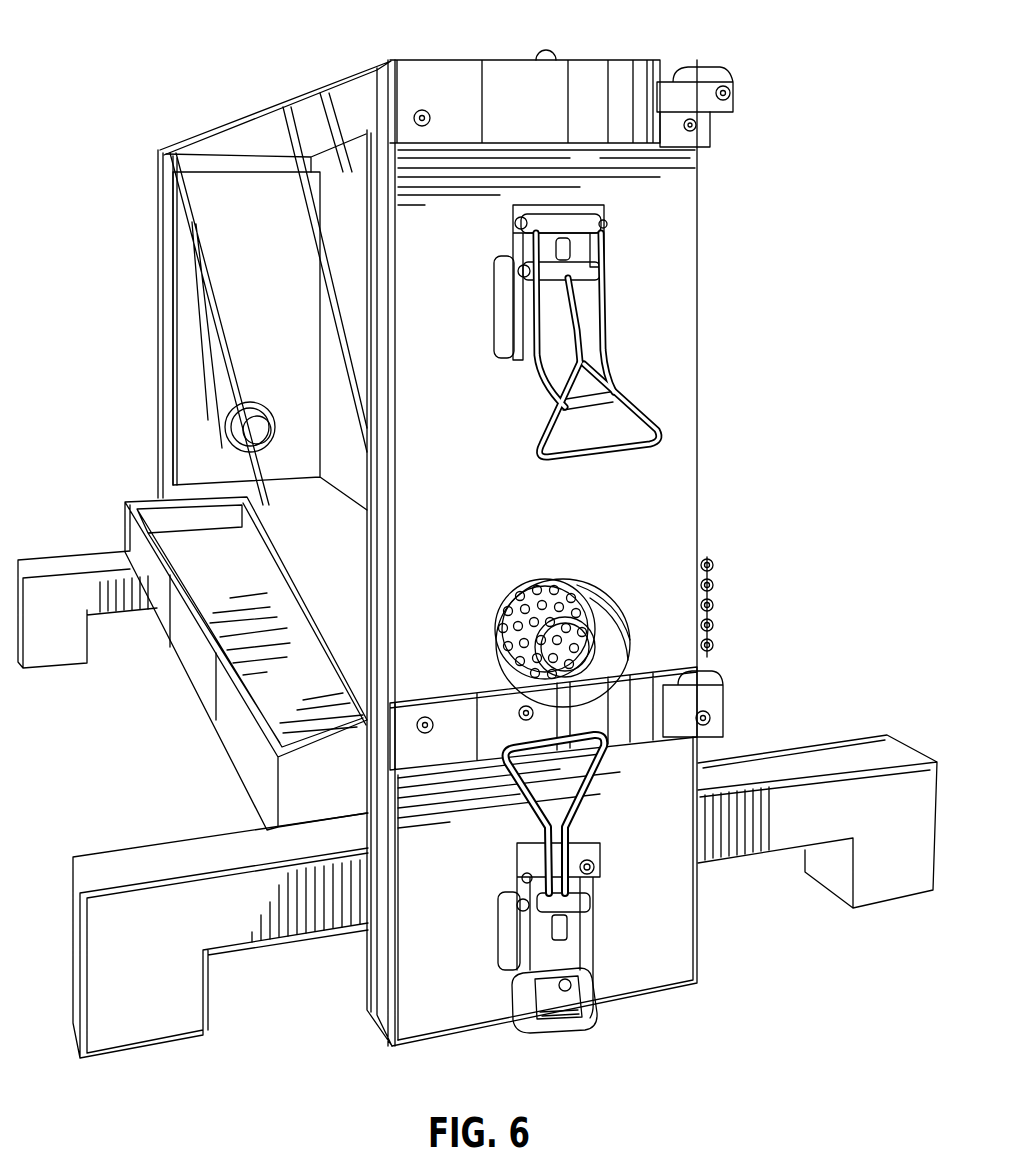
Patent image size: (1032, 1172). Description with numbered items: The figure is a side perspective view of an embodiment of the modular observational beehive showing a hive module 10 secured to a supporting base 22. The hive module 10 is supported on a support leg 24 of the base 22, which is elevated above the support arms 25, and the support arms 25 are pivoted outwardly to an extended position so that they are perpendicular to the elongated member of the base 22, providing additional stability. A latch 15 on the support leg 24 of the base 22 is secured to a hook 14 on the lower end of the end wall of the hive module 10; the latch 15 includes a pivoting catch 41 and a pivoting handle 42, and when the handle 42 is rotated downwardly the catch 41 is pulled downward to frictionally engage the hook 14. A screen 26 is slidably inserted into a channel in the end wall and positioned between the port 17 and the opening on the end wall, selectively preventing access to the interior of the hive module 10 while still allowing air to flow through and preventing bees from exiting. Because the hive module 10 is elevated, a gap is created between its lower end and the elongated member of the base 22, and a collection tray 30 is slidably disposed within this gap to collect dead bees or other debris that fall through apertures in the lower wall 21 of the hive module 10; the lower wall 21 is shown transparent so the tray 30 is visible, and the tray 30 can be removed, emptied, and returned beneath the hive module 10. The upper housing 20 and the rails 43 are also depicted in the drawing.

The hive module 10 is at (134, 237).
The upper cabinet 20 is at (352, 99).
The lower wall 21 is at (303, 513).
The rail 43 is at (622, 80).
The latch 15 is at (600, 264).
The port 17 is at (597, 602).
The screen 26 is at (702, 560).
The hook 14 is at (552, 750).
The pivoting catch 41 is at (590, 786).
The pivoting handle 42 is at (595, 977).
The base 22 is at (706, 956).
The support leg 24 is at (413, 1018).
The support arm 25 is at (62, 610).
The collection tray 30 is at (130, 532).